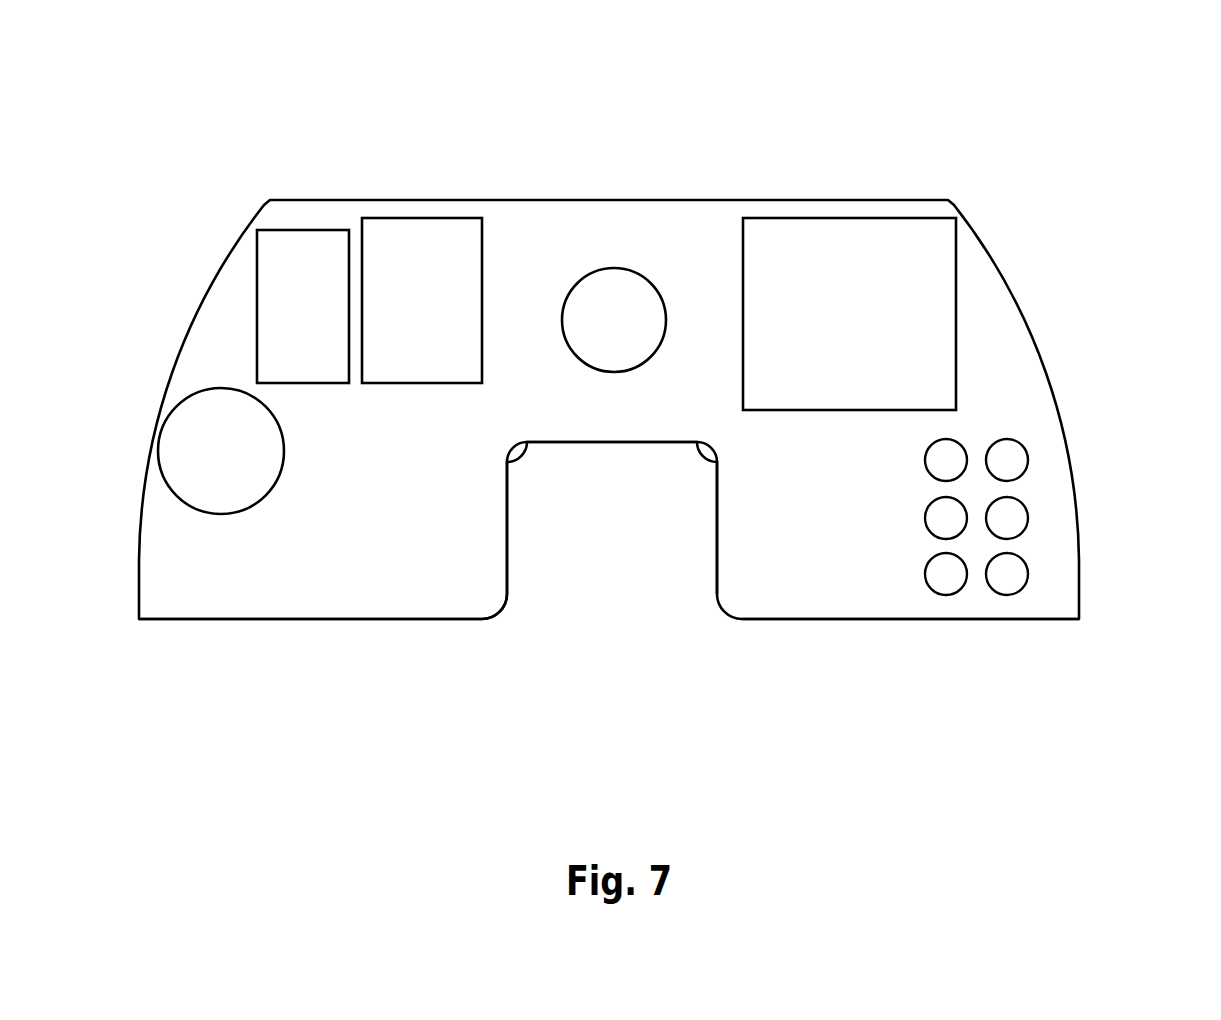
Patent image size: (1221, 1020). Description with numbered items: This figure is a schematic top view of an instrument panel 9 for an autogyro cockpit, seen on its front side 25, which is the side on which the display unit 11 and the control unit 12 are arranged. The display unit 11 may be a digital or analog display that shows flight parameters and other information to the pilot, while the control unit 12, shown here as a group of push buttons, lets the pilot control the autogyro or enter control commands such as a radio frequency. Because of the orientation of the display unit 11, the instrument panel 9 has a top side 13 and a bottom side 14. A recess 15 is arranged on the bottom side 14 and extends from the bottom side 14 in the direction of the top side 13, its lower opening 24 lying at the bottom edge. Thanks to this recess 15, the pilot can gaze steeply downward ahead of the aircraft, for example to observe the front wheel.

The instrument panel 9 is at (210, 167).
The display unit 11 is at (860, 278).
The control unit 12 is at (1013, 458).
The top side 13 is at (385, 200).
The bottom side 14 is at (375, 618).
The recess 15 is at (641, 545).
The lower opening 24 is at (595, 610).
The front side 25 is at (808, 583).